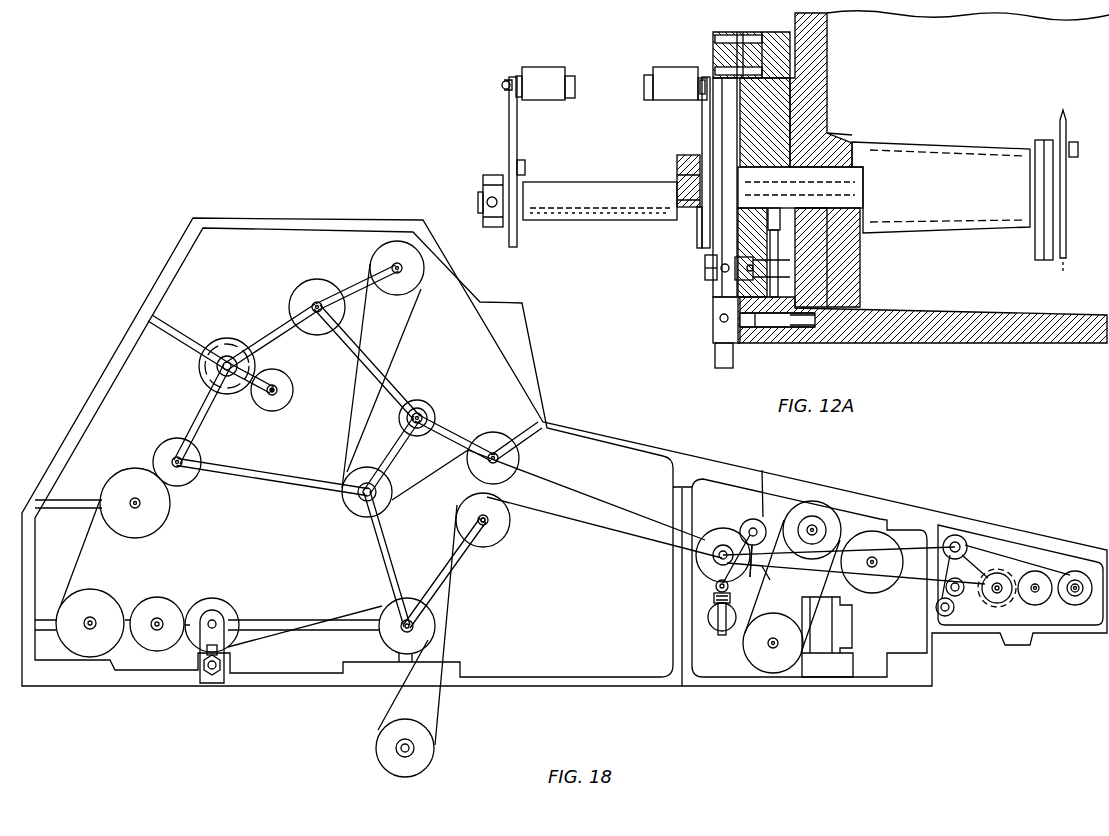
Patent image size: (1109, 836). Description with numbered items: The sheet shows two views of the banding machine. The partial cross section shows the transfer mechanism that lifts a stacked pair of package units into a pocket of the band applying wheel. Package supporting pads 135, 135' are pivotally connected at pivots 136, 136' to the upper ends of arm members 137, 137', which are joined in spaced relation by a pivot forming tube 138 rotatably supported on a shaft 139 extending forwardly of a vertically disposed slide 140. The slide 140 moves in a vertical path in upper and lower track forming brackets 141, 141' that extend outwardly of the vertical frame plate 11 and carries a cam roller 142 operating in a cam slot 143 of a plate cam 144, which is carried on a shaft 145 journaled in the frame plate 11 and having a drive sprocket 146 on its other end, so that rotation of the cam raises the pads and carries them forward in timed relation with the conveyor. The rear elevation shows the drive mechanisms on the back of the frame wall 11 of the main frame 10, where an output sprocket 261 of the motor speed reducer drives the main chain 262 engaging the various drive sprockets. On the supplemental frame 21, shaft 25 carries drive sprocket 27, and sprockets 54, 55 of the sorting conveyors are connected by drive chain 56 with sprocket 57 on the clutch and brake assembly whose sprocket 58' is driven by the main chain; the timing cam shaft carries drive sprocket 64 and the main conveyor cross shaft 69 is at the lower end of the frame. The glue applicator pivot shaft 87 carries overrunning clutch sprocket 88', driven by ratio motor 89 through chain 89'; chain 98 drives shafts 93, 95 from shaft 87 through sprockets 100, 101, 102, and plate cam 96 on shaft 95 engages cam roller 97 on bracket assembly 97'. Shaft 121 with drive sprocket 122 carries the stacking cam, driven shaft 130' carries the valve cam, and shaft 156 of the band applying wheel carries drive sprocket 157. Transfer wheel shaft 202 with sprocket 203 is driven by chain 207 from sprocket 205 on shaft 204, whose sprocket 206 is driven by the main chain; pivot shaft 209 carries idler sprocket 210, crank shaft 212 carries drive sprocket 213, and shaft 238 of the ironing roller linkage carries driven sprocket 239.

In FIG. 12A, the main frame 10 is at (871, 342).
In FIG. 18, the main frame 10 is at (644, 444).
In FIG. 12A, the vertical frame plate 11 is at (815, 52).
In FIG. 18, the supplemental frame 21 is at (948, 516).
In FIG. 18, the shaft 25 is at (1077, 582).
In FIG. 18, the drive sprocket 27 is at (1078, 594).
In FIG. 18, the sprocket 54 is at (962, 594).
In FIG. 18, the sprocket 55 is at (958, 543).
In FIG. 18, the drive chain 56 is at (996, 580).
In FIG. 18, the sprocket 57 is at (1003, 582).
In FIG. 18, the sprocket 58' is at (1039, 596).
In FIG. 18, the drive sprocket 64 is at (900, 584).
In FIG. 18, the cross shaft 69 is at (93, 618).
In FIG. 18, the pivot shaft 87 is at (815, 528).
In FIG. 18, the overrunning clutch sprocket 88' is at (829, 514).
In FIG. 18, the ratio motor 89 is at (763, 644).
In FIG. 18, the chain 89' is at (780, 583).
In FIG. 18, the shaft 93 is at (751, 566).
In FIG. 18, the shaft 95 is at (718, 555).
In FIG. 18, the plate cam 96 is at (707, 540).
In FIG. 18, the cam roller 97 is at (687, 602).
In FIG. 18, the bracket assembly 97' is at (713, 633).
In FIG. 18, the chain 98 is at (759, 481).
In FIG. 18, the sprocket 100 is at (808, 526).
In FIG. 18, the sprocket 101 is at (748, 528).
In FIG. 18, the sprocket 102 is at (716, 568).
In FIG. 18, the shaft 121 is at (412, 624).
In FIG. 18, the drive sprocket 122 is at (430, 612).
In FIG. 18, the driven shaft 130' is at (465, 516).
In FIG. 12A, the package supporting pad 135 is at (549, 69).
In FIG. 12A, the package supporting pad 135' is at (675, 69).
In FIG. 12A, the pivot 136 is at (489, 70).
In FIG. 12A, the pivot 136' is at (680, 103).
In FIG. 12A, the arm member 137 is at (495, 162).
In FIG. 12A, the arm member 137' is at (682, 162).
In FIG. 12A, the pivot forming tube 138 is at (568, 184).
In FIG. 12A, the shaft 139 is at (480, 196).
In FIG. 12A, the slide 140 is at (718, 240).
In FIG. 12A, the track forming bracket 141 is at (702, 152).
In FIG. 12A, the track forming bracket 141' is at (700, 332).
In FIG. 12A, the cam roller 142 is at (728, 276).
In FIG. 12A, the cam slot 143 is at (760, 262).
In FIG. 12A, the plate cam 144 is at (762, 127).
In FIG. 12A, the shaft 145 is at (855, 196).
In FIG. 18, the shaft 145 is at (156, 634).
In FIG. 12A, the drive sprocket 146 is at (1072, 243).
In FIG. 18, the drive sprocket 146 is at (165, 606).
In FIG. 18, the shaft 156 is at (183, 461).
In FIG. 18, the drive sprocket 157 is at (186, 476).
In FIG. 18, the shaft 202 is at (275, 388).
In FIG. 18, the sprocket 203 is at (280, 396).
In FIG. 18, the shaft 204 is at (222, 365).
In FIG. 18, the sprocket 205 is at (207, 378).
In FIG. 18, the sprocket 206 is at (238, 330).
In FIG. 18, the chain 207 is at (245, 395).
In FIG. 18, the pivot shaft 209 is at (392, 264).
In FIG. 18, the idler sprocket 210 is at (410, 287).
In FIG. 18, the shaft 212 is at (312, 304).
In FIG. 18, the drive sprocket 213 is at (334, 318).
In FIG. 18, the shaft 238 is at (360, 498).
In FIG. 18, the driven sprocket 239 is at (352, 516).
In FIG. 18, the output sprocket 261 is at (433, 770).
In FIG. 18, the chain 262 is at (576, 528).